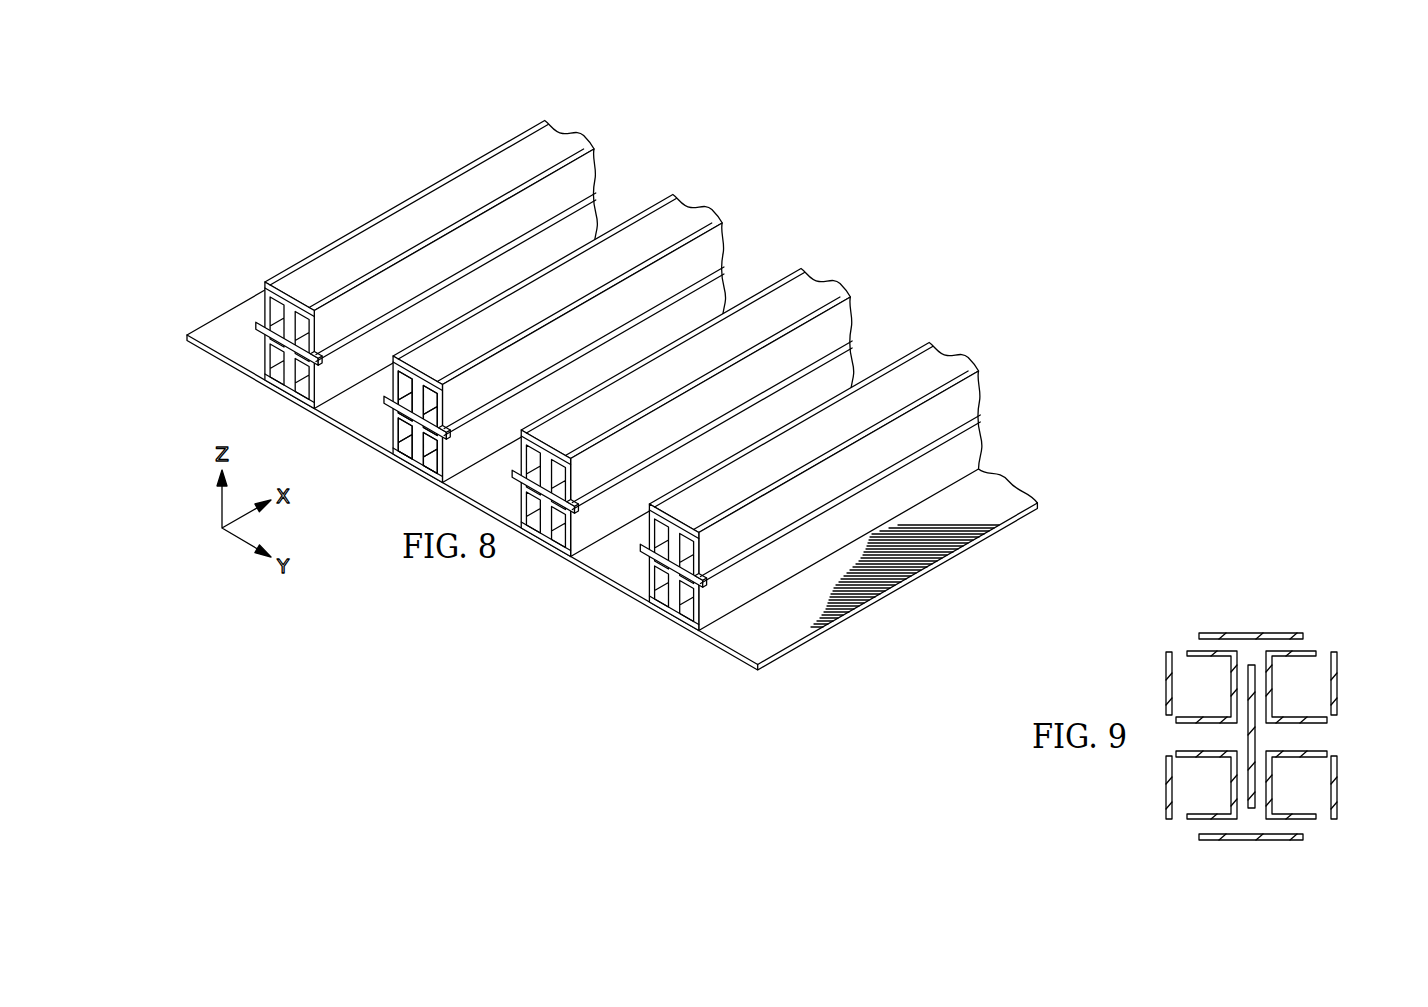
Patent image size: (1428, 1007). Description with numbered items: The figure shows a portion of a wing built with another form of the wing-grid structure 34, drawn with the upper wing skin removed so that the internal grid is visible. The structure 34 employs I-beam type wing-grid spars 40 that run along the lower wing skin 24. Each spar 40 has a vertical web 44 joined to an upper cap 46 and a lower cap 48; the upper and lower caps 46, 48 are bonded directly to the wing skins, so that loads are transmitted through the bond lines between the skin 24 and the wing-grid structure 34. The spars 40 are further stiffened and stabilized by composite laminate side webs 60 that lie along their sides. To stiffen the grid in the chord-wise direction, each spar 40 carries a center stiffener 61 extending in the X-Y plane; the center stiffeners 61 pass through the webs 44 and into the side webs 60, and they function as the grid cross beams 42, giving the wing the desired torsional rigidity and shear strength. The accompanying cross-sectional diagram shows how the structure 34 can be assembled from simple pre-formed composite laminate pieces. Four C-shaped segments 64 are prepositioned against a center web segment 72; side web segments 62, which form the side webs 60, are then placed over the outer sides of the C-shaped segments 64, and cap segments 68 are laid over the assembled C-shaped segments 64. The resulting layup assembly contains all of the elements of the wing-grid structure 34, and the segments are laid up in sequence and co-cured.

In FIG. 8, the lower wing skin 24 is at (223, 312).
In FIG. 8, the wing-grid structure 34 is at (640, 384).
In FIG. 8, the wing-grid spar 40 is at (697, 207).
In FIG. 9, the wing-grid spar 40 is at (1251, 714).
In FIG. 8, the grid cross beam 42 is at (598, 178).
In FIG. 8, the web 44 is at (431, 447).
In FIG. 8, the upper cap 46 is at (825, 285).
In FIG. 8, the lower cap 48 is at (660, 588).
In FIG. 8, the side web 60 is at (845, 314).
In FIG. 8, the center stiffener 61 is at (960, 433).
In FIG. 9, the side web segment 62 is at (1166, 682).
In FIG. 9, the C-shaped segment 64 is at (1193, 648).
In FIG. 9, the cap segment 68 is at (1251, 631).
In FIG. 9, the center web segment 72 is at (1255, 729).